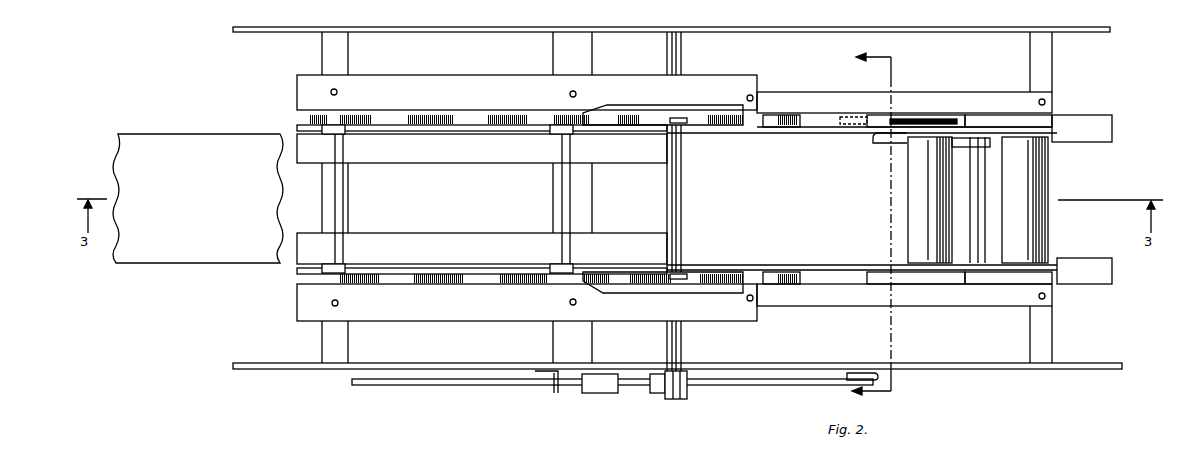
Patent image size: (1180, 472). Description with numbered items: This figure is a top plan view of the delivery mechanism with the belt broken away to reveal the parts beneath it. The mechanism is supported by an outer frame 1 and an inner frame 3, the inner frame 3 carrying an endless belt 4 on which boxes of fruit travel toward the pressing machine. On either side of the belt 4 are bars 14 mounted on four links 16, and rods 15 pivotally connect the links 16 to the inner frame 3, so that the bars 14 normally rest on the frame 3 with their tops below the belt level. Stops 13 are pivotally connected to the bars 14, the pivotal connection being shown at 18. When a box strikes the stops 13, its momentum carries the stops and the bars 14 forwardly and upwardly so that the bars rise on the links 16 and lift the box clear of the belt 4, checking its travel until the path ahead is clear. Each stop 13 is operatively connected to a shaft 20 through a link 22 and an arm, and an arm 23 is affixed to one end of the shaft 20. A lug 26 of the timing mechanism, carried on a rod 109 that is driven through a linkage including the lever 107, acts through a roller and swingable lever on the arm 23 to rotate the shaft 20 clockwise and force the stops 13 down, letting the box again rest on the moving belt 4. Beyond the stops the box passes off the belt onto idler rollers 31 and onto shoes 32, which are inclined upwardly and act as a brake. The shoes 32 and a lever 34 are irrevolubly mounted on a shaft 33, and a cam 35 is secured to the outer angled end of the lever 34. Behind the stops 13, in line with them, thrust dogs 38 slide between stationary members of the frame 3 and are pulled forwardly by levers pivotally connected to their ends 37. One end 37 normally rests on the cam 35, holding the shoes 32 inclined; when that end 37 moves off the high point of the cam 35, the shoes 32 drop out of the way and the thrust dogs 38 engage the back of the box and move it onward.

The outer frame 1 is at (907, 29).
The inner frame 3 is at (924, 98).
The endless belt 4 is at (217, 264).
The stops 13 is at (632, 126).
The bars 14 is at (478, 131).
The rods 15 is at (344, 196).
The links 16 is at (331, 134).
The pivotal connection 18 is at (860, 218).
The shaft 20 is at (683, 196).
The link 22 is at (680, 116).
The arm 23 is at (658, 393).
The lug 26 is at (609, 393).
The idler rollers 31 is at (916, 198).
The shoes 32 is at (1100, 138).
The shaft 33 is at (986, 200).
The lever 34 is at (874, 143).
The cam 35 is at (928, 118).
The ends 37 is at (836, 115).
The thrust dogs 38 is at (772, 128).
The lever 107 is at (894, 380).
The rod 109 is at (765, 386).